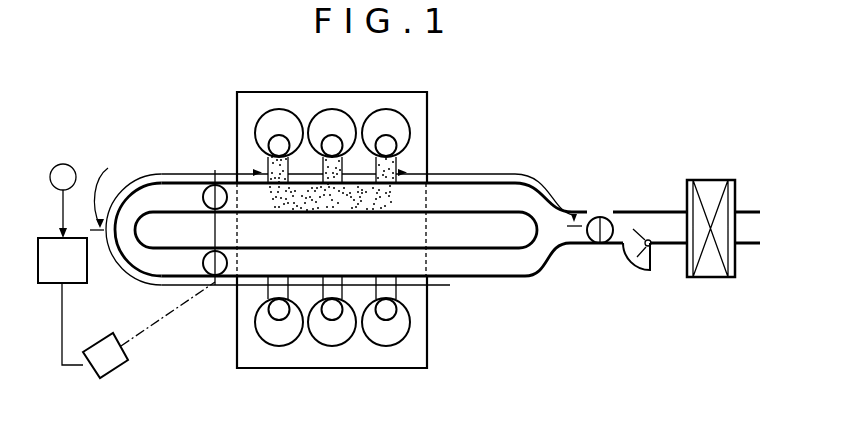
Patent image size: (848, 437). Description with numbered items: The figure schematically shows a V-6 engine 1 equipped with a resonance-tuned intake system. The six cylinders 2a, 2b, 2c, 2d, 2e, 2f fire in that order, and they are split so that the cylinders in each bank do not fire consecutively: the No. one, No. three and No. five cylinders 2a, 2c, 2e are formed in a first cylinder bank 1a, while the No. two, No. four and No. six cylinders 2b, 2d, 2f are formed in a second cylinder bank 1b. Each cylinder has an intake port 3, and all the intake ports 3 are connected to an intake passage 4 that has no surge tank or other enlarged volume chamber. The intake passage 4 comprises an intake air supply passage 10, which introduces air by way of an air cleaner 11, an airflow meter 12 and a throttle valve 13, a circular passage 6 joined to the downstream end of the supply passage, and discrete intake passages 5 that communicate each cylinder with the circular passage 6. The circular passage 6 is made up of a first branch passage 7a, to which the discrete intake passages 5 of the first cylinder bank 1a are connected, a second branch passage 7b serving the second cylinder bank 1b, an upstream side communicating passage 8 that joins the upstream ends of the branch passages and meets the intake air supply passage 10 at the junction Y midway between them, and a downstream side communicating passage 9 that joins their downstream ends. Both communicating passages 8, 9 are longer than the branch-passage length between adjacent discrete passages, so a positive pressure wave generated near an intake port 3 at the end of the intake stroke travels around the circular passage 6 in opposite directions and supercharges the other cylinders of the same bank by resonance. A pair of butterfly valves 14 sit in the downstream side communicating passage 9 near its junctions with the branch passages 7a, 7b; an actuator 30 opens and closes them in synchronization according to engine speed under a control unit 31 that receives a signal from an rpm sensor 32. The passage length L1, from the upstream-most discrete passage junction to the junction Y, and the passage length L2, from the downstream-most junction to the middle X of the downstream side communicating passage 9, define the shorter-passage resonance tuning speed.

The V-6 engine 1 is at (442, 102).
The first cylinder bank 1a is at (417, 92).
The second cylinder bank 1b is at (430, 355).
The No. 1 cylinder 2a is at (277, 110).
The No. 2 cylinder 2b is at (283, 345).
The No. 3 cylinder 2c is at (334, 110).
The No. 4 cylinder 2d is at (334, 345).
The No. 5 cylinder 2e is at (388, 110).
The No. 6 cylinder 2f is at (386, 345).
The intake port 3 is at (270, 143).
The intake passage 4 is at (586, 212).
The discrete intake passage 5 is at (278, 183).
The circular passage 6 is at (507, 197).
The first branch passage 7a is at (325, 200).
The second branch passage 7b is at (335, 262).
The upstream side communicating passage 8 is at (524, 262).
The downstream side communicating passage 9 is at (128, 200).
The intake air supply passage 10 is at (645, 222).
The air cleaner 11 is at (711, 179).
The airflow meter 12 is at (645, 272).
The throttle valve 13 is at (610, 245).
The butterfly valve 14 is at (208, 187).
The actuator 30 is at (113, 372).
The control unit 31 is at (78, 283).
The rpm sensor 32 is at (67, 162).
The middle of the downstream side communicating passage X is at (128, 233).
The junction of the circular passage to the intake air supply passage Y is at (553, 231).
The passage length L1 is at (485, 172).
The passage length L2 is at (150, 173).